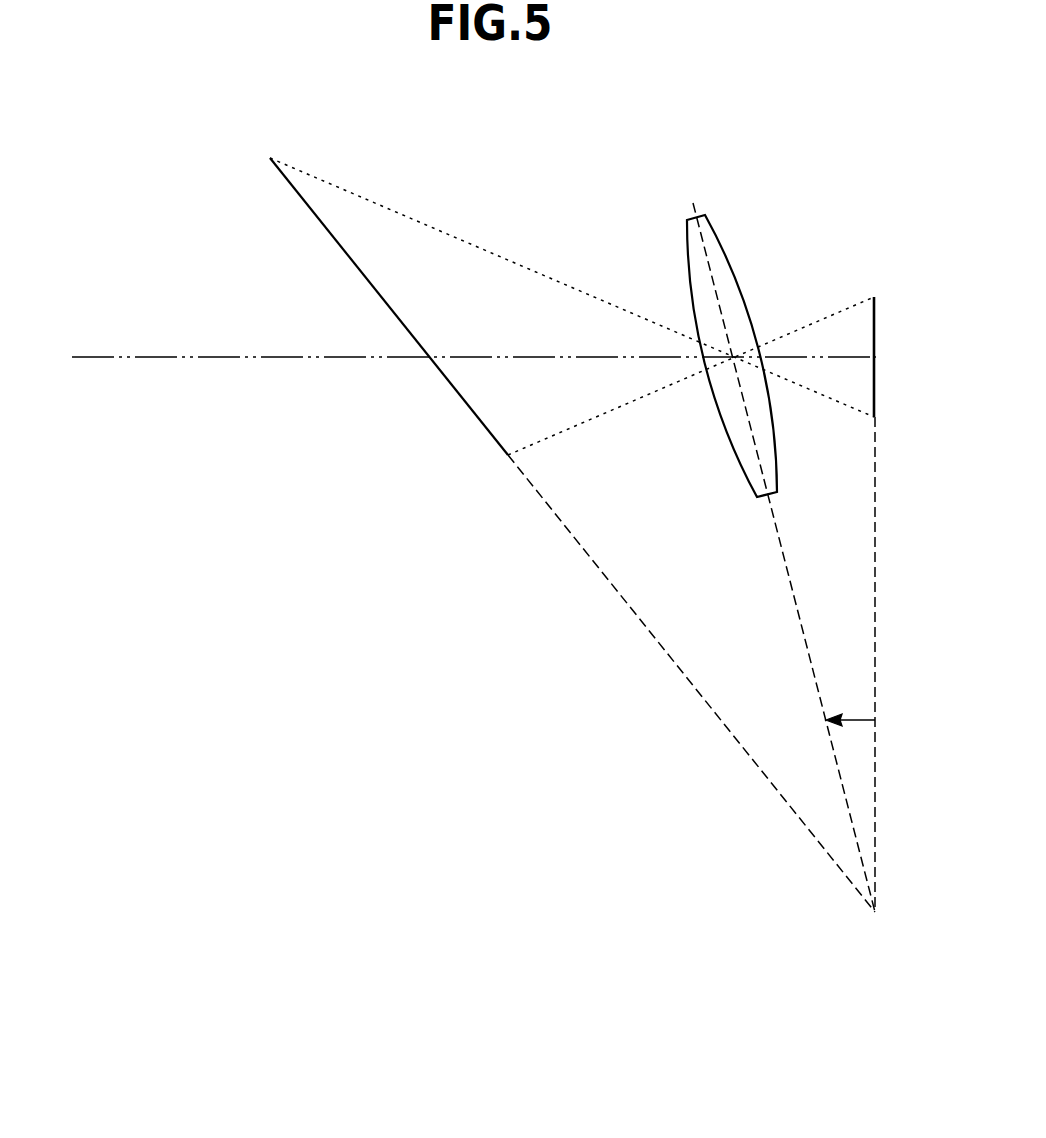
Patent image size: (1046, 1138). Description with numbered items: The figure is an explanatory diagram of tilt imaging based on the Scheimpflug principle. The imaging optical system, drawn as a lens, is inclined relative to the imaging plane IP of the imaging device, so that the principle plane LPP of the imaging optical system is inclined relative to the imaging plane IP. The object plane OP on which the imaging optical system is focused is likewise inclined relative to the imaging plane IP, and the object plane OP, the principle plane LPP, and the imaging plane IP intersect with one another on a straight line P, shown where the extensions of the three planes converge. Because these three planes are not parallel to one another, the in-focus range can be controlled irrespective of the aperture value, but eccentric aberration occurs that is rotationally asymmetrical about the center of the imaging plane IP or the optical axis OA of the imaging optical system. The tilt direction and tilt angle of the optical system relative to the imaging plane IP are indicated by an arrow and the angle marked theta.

The object plane OP is at (322, 223).
The optical axis OA is at (222, 358).
The principle plane LPP is at (713, 230).
The imaging plane IP is at (876, 323).
The straight line P is at (703, 698).